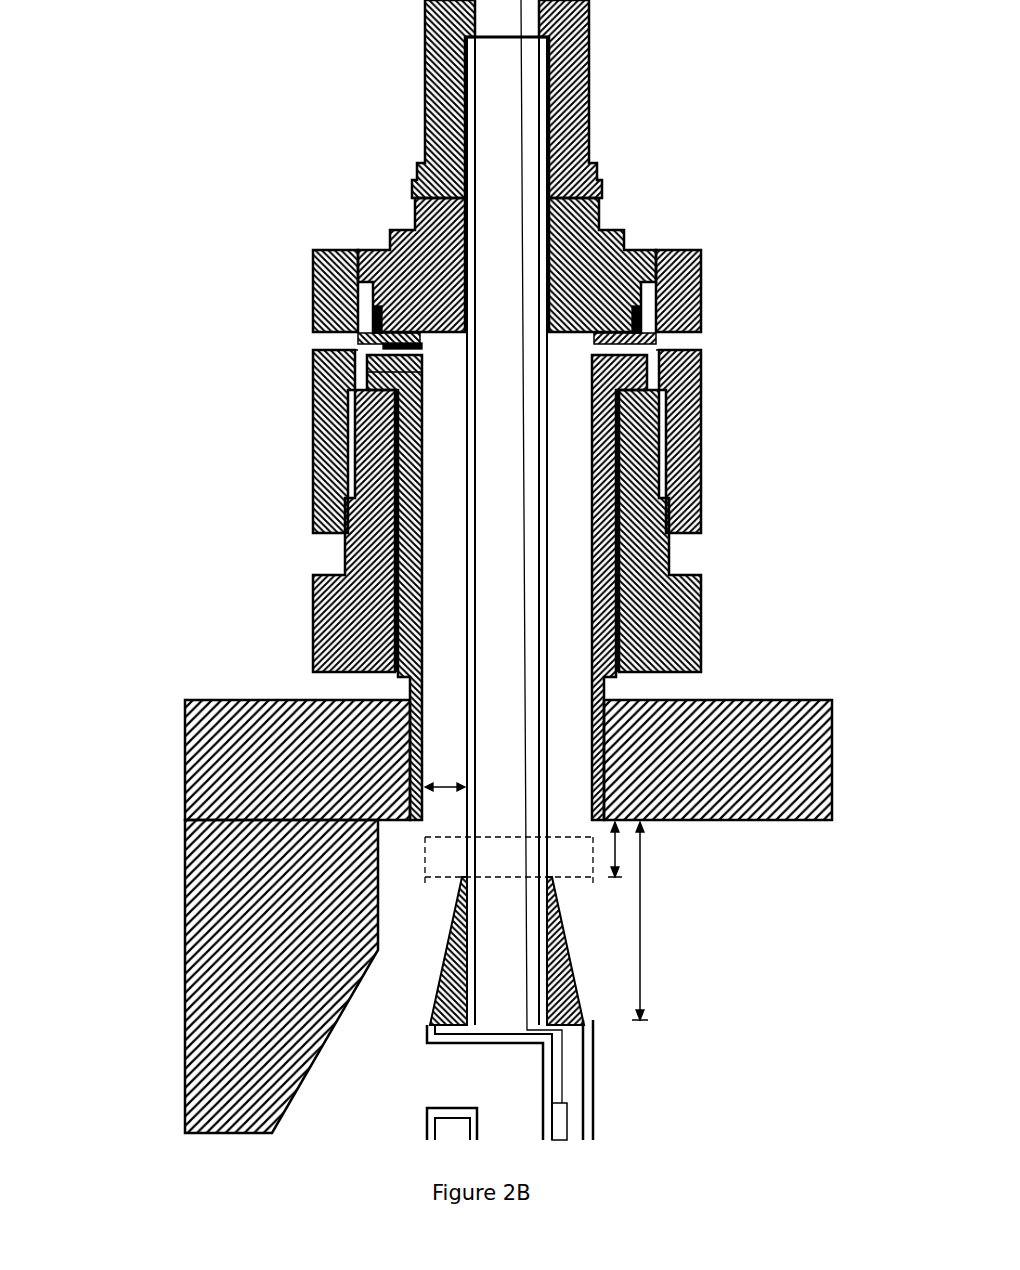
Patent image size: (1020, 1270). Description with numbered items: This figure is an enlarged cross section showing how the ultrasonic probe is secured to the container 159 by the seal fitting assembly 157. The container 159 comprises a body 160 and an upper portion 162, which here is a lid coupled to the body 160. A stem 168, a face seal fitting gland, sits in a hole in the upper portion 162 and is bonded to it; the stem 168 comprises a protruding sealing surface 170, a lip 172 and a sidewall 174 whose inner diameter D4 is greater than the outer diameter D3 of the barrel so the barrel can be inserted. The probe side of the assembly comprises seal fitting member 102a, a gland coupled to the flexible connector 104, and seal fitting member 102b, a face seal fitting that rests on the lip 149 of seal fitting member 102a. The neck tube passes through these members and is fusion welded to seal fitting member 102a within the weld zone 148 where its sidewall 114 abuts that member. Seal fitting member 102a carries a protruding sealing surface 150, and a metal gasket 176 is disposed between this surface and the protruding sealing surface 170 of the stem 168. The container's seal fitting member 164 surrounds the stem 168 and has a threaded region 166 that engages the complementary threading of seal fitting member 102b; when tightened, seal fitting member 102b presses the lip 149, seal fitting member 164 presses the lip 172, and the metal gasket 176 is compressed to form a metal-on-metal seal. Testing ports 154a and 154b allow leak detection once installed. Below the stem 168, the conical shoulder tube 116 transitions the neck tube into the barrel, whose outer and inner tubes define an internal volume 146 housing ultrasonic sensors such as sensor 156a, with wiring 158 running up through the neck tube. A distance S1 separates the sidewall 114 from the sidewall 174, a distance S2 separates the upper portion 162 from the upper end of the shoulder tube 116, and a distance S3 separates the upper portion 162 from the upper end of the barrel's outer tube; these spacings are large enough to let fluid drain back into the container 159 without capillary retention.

The flexible connector 104 is at (583, 45).
The seal fitting member 102a is at (600, 213).
The seal fitting member 102b is at (700, 249).
The lip 149 is at (380, 283).
The weld zone 148 is at (470, 330).
The testing port 154a is at (345, 341).
The testing port 154b is at (690, 341).
The metal gasket 176 is at (596, 338).
The protruding sealing surface 150 is at (390, 336).
The protruding sealing surface 170 is at (410, 344).
The lip 172 is at (423, 413).
The threaded region 166 is at (348, 452).
The seal fitting member 164 is at (325, 598).
The stem 168 is at (423, 550).
The sidewall 114 is at (483, 490).
The sidewall 174 is at (423, 657).
The seal fitting assembly 157 is at (770, 545).
The container 159 is at (152, 661).
The upper portion 162 is at (205, 757).
The body 160 is at (225, 950).
The shoulder tube 116 is at (433, 993).
The wiring 158 is at (560, 1090).
The internal volume 146 is at (577, 1070).
The ultrasonic sensor 156a is at (563, 1120).
The distance S1 is at (443, 788).
The distance S2 is at (618, 860).
The distance S3 is at (643, 915).
The outer diameter D3 is at (500, 878).
The inner diameter D4 is at (430, 838).